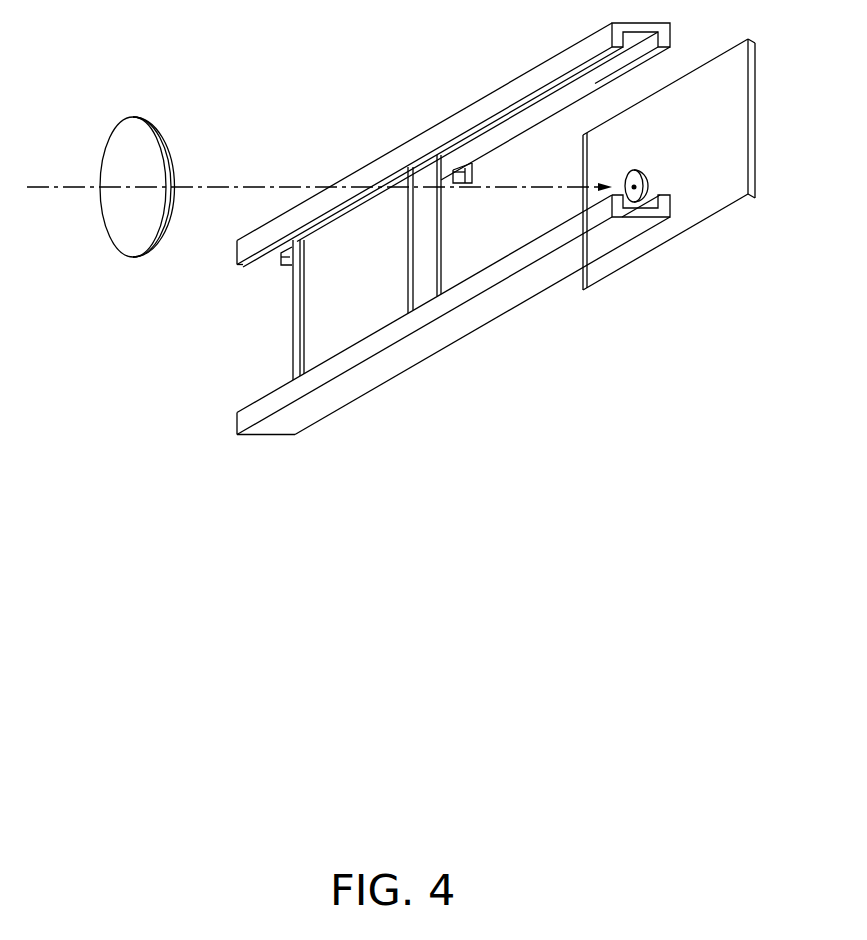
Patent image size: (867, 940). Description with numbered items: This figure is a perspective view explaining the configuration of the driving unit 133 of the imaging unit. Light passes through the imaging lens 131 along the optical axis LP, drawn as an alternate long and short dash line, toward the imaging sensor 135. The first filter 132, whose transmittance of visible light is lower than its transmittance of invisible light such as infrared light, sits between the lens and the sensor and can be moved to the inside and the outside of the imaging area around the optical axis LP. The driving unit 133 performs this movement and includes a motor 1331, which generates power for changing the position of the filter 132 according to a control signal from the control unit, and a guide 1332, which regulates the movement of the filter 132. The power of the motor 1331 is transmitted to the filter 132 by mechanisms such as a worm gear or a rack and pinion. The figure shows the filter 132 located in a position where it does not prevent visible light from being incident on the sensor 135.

The imaging lens 131 is at (133, 118).
The optical axis LP is at (223, 187).
The first filter 132 is at (322, 302).
The driving unit 133 is at (453, 220).
The motor 1331 is at (450, 195).
The guide 1332 is at (557, 63).
The imaging sensor 135 is at (637, 170).